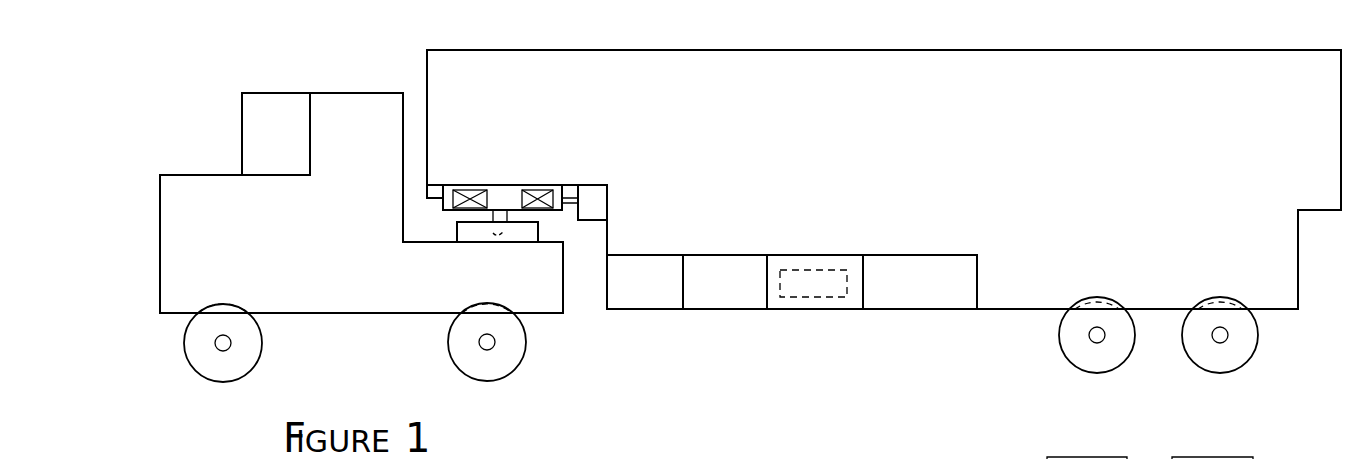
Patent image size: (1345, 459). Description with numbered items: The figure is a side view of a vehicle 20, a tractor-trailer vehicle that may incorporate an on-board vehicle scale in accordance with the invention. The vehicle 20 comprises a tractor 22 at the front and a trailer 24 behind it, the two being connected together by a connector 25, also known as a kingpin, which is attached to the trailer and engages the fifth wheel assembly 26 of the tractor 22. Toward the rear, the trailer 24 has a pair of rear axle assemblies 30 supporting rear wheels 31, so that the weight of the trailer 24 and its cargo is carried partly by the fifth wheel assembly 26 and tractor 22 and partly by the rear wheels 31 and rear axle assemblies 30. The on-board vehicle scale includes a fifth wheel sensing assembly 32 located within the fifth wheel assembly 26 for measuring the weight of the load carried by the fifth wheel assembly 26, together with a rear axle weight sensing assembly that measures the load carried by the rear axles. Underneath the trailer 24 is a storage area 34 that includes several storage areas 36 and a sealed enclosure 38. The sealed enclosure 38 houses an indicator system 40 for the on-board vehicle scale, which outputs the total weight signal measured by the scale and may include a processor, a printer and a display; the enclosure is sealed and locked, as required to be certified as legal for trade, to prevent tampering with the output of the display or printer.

The vehicle 20 is at (278, 75).
The tractor 22 is at (202, 175).
The trailer 24 is at (1257, 50).
The connector 25 is at (473, 230).
The fifth wheel assembly 26 is at (502, 190).
The rear axle assemblies 30 is at (1089, 335).
The rear wheels 31 is at (1082, 367).
The fifth wheel sensing assembly 32 is at (477, 188).
The storage area 34 is at (822, 255).
The storage areas 36 is at (650, 303).
The sealed enclosure 38 is at (820, 310).
The indicator system 40 is at (827, 268).